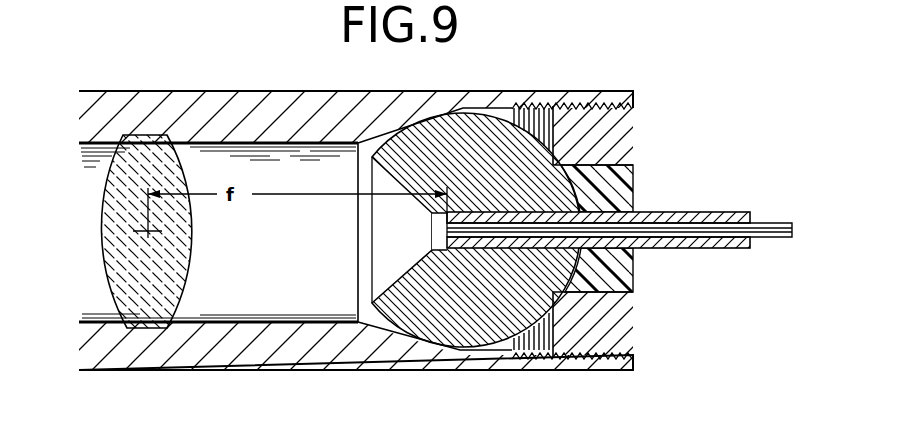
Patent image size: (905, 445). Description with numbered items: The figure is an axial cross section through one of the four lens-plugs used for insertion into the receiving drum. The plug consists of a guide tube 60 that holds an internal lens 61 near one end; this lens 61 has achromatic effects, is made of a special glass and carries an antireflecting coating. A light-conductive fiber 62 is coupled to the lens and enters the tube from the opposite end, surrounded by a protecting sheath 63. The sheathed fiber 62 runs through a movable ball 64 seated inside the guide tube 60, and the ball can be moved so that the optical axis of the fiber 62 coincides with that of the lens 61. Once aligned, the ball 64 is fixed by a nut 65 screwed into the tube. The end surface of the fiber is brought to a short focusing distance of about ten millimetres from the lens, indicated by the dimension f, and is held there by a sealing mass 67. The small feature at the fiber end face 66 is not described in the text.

The guide tube 60 is at (313, 352).
The internal lens 61 is at (118, 285).
The light-conductive fiber 62 is at (738, 227).
The protecting sheath 63 is at (685, 248).
The movable ball 64 is at (495, 323).
The nut 65 is at (622, 323).
The gap at fiber end face 66 is at (448, 233).
The sealing mass 67 is at (620, 192).